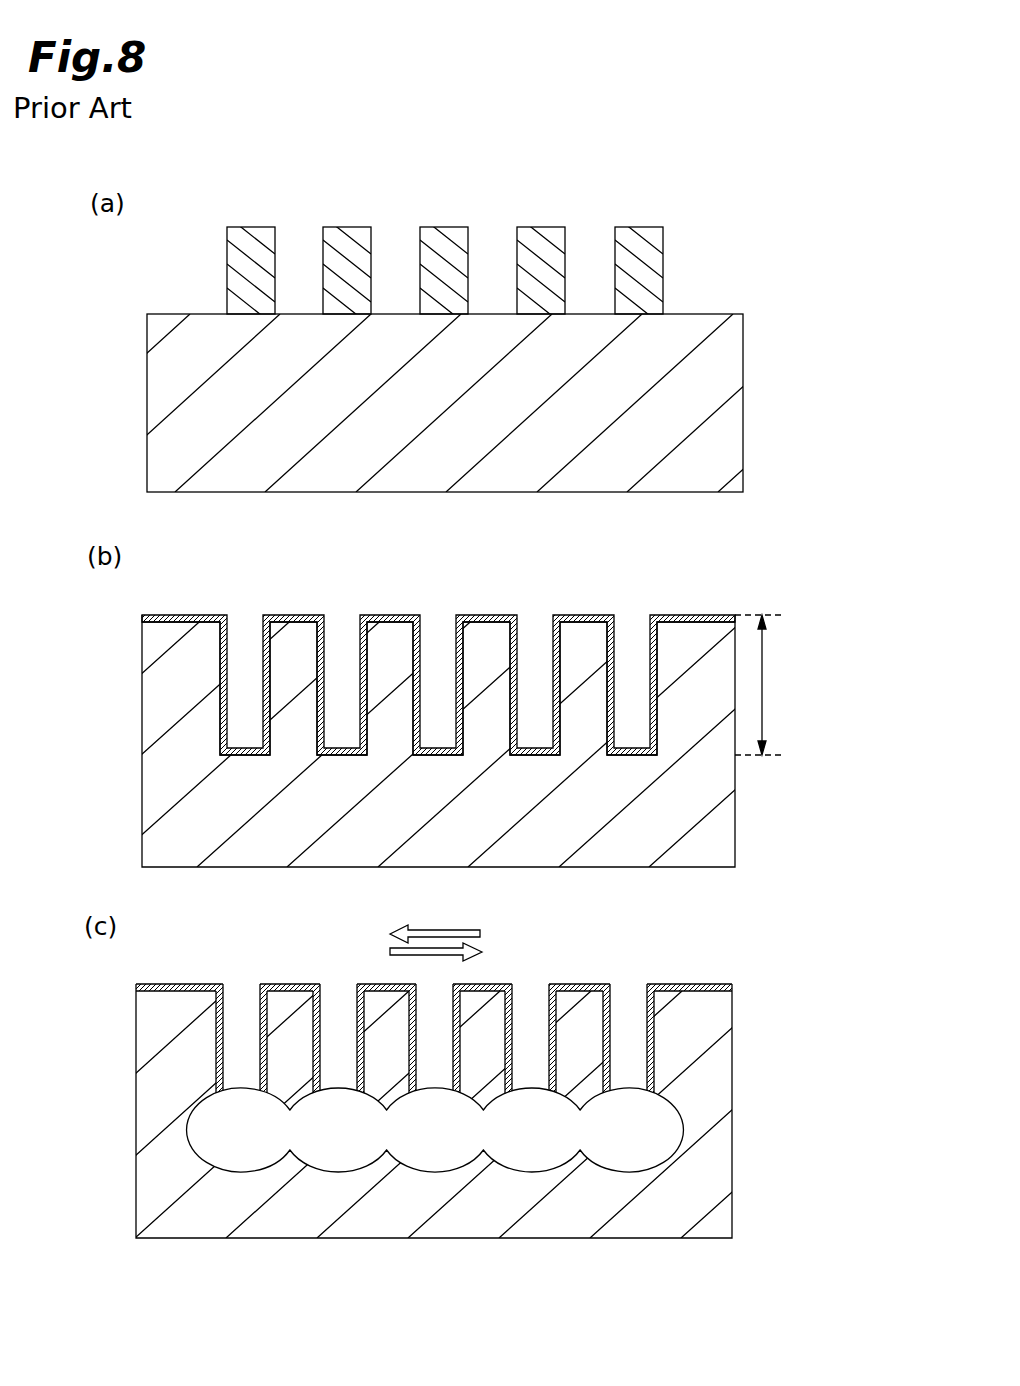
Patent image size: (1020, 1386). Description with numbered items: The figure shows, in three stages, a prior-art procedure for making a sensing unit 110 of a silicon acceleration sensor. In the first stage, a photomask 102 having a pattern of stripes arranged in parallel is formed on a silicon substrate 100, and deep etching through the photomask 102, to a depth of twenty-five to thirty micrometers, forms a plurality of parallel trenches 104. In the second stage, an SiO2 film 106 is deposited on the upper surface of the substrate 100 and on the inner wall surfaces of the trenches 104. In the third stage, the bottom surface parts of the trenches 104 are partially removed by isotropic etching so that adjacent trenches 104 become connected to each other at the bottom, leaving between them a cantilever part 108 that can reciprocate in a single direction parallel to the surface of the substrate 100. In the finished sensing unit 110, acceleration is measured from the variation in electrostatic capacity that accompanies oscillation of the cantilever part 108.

The silicon substrate 100 is at (731, 412).
The photomask 102 is at (640, 233).
The trenches 104 is at (634, 628).
The SiO2 film 106 is at (492, 615).
The cantilever part 108 is at (561, 976).
The sensing unit 110 is at (731, 958).